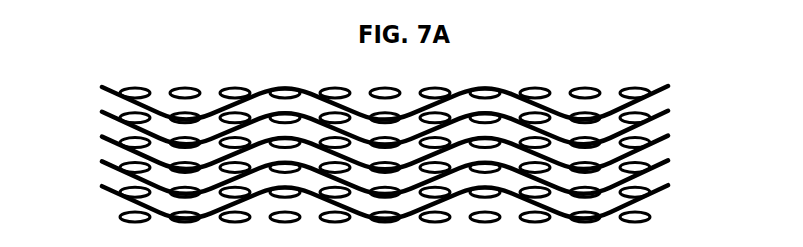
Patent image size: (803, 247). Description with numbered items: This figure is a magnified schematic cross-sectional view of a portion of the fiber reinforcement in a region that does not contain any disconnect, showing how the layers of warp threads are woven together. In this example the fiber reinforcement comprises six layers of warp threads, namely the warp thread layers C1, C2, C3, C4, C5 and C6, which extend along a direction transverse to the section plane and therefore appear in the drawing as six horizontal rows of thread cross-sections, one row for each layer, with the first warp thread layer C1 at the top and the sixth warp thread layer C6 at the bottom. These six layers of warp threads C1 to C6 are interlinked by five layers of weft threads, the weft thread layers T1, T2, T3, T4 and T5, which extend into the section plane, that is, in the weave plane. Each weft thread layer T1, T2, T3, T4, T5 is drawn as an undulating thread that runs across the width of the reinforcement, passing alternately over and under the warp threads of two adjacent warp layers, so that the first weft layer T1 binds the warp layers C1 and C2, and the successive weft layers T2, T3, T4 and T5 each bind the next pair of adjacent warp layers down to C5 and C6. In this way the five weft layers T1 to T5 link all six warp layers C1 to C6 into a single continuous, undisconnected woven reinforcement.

The weft thread layer T1 is at (102, 87).
The weft thread layer T2 is at (102, 112).
The weft thread layer T3 is at (102, 137).
The weft thread layer T4 is at (102, 161).
The weft thread layer T5 is at (102, 186).
The warp thread layer C1 is at (638, 84).
The warp thread layer C2 is at (638, 109).
The warp thread layer C3 is at (638, 134).
The warp thread layer C4 is at (638, 159).
The warp thread layer C5 is at (638, 184).
The warp thread layer C6 is at (638, 208).